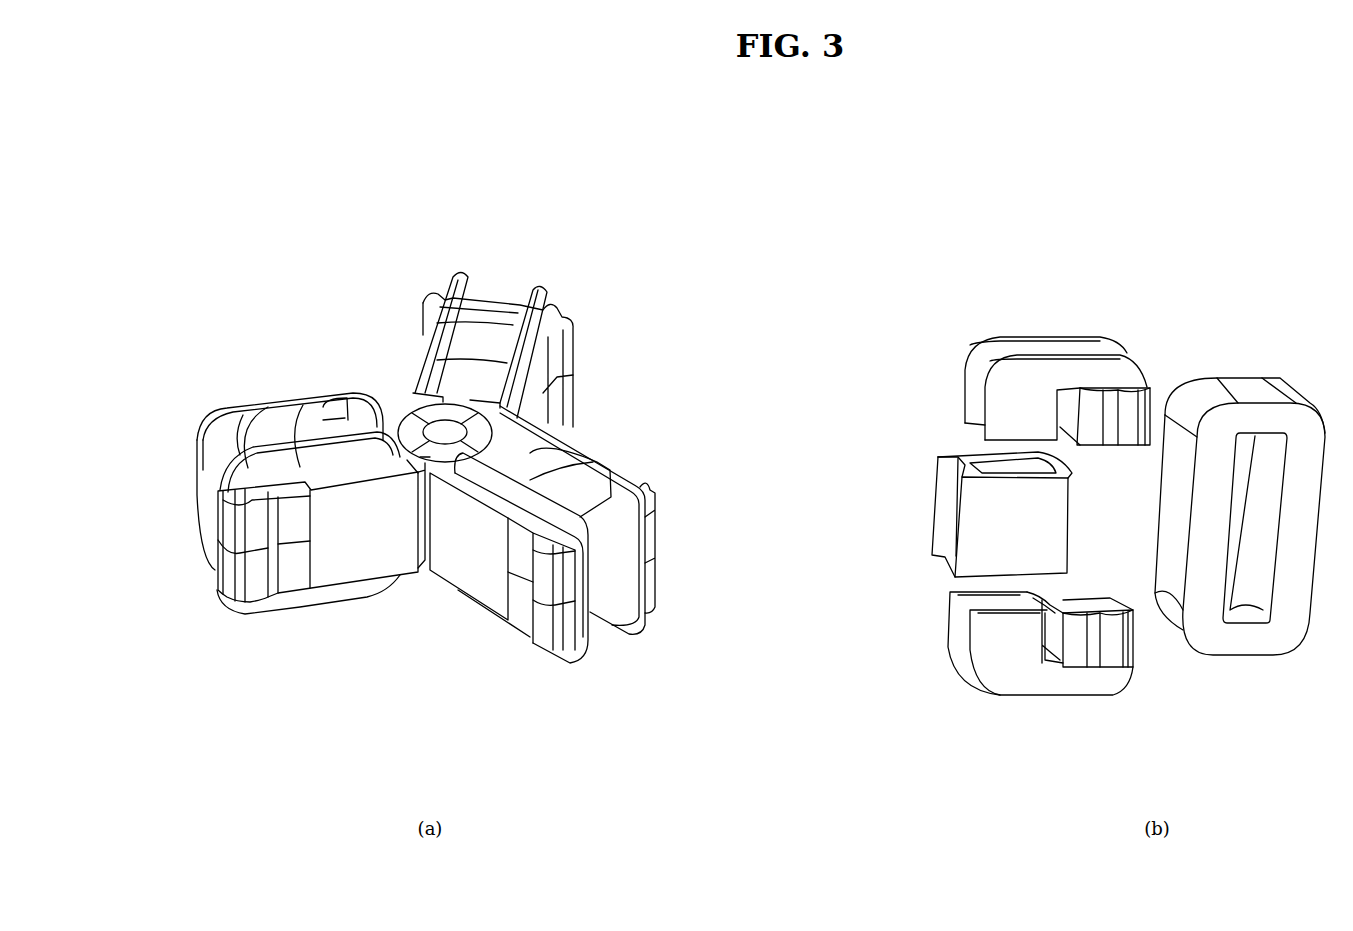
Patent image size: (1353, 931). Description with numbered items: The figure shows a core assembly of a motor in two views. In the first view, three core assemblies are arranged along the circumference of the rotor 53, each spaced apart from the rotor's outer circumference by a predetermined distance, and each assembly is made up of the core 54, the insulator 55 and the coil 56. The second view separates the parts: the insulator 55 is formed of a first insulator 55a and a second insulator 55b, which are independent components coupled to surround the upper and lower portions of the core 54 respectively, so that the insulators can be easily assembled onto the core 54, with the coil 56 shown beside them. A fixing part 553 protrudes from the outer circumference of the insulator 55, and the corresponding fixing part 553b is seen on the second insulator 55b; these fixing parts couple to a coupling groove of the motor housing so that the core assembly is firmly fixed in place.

The rotor 53 is at (477, 433).
The core 54 is at (973, 452).
The insulator 55 is at (222, 433).
The first insulator 55a is at (1013, 367).
The second insulator 55b is at (1005, 678).
The coil 56 is at (323, 420).
The fixing part 553 is at (253, 535).
The fixing part of second insulator 553b is at (1112, 660).